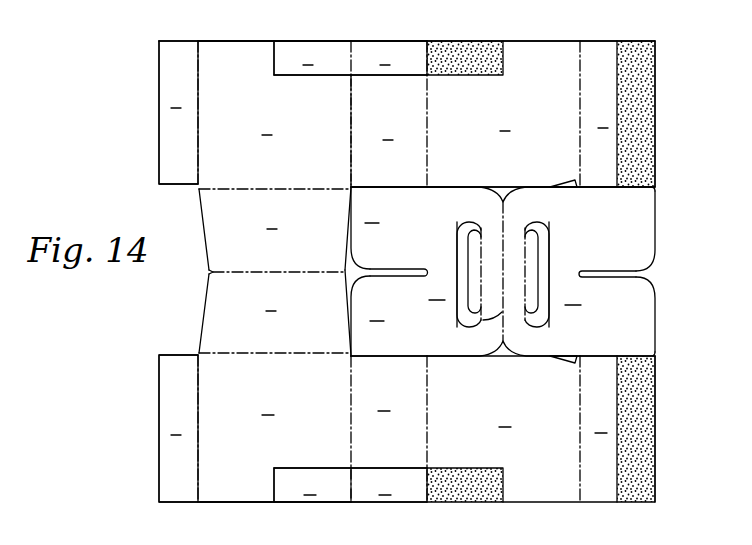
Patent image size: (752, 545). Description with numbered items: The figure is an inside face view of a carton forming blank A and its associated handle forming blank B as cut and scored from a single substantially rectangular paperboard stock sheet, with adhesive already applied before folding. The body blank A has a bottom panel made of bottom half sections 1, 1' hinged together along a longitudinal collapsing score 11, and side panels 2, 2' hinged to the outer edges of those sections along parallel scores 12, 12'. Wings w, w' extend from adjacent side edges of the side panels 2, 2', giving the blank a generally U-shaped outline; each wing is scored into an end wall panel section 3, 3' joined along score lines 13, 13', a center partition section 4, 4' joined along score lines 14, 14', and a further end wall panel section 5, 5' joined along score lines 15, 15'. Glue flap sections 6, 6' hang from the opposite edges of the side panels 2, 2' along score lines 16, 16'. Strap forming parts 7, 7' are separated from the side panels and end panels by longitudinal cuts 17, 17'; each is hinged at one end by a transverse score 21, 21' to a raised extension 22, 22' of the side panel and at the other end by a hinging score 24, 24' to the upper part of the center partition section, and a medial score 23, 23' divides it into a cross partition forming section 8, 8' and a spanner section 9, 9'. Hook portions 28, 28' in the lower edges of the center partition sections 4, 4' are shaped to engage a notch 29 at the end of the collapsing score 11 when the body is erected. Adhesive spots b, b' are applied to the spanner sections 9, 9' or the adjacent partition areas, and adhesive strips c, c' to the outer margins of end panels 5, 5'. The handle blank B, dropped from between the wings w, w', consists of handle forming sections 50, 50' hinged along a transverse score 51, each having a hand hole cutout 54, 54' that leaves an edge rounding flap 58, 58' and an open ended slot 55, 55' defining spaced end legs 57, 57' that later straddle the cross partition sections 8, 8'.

The bottom half section 1 is at (275, 228).
The bottom half section 1' is at (275, 313).
The side panel 2 is at (274, 88).
The side panel 2' is at (274, 451).
The end wall panel section 3 is at (389, 156).
The end wall panel section 3' is at (389, 383).
The center partition section 4 is at (503, 151).
The center partition section 4' is at (503, 391).
The end wall panel section 5 is at (617, 150).
The end wall panel section 5' is at (617, 394).
The glue flap section 6 is at (178, 112).
The glue flap section 6' is at (178, 428).
The strap forming part 7 is at (350, 28).
The strap forming part 7' is at (350, 521).
The cross partition forming section 8 is at (312, 58).
The cross partition forming section 8' is at (312, 485).
The spanner section 9 is at (389, 62).
The spanner section 9' is at (389, 481).
The collapsing score 11 is at (254, 270).
The score 12 is at (275, 179).
The score 12' is at (275, 363).
The score line 13 is at (336, 131).
The score line 13' is at (334, 429).
The score line 14 is at (444, 114).
The score line 14' is at (446, 429).
The score line 15 is at (564, 114).
The score line 15' is at (564, 429).
The score line 16 is at (214, 112).
The score line 16' is at (215, 428).
The longitudinally extending cut 17 is at (350, 87).
The longitudinally extending cut 17' is at (350, 453).
The transverse score 21 is at (267, 49).
The transverse score 21' is at (279, 498).
The raised extension 22 is at (236, 38).
The raised extension 22' is at (236, 508).
The medial score 23 is at (338, 105).
The medial score 23' is at (338, 496).
The hinging score 24 is at (416, 47).
The hinging score 24' is at (416, 499).
The hook portion 28 is at (575, 193).
The hook portion 28' is at (574, 349).
The notch 29 is at (210, 272).
The handle forming section 50 is at (443, 274).
The handle forming section 50' is at (566, 274).
The transverse score 51 is at (494, 317).
The hand hole cutout 54 is at (456, 271).
The hand hole cutout 54' is at (556, 272).
The open ended slot 55 is at (399, 263).
The open ended slot 55' is at (607, 263).
The end leg 57 is at (368, 271).
The end leg 57' is at (668, 271).
The edge rounding flap 58 is at (456, 274).
The edge rounding flap 58' is at (556, 274).
The carton forming blank A is at (661, 65).
The handle forming blank B is at (664, 211).
The adhesive spot b is at (465, 48).
The adhesive spot b' is at (465, 499).
The adhesive strip c is at (652, 114).
The adhesive strip c' is at (653, 429).
The wing w is at (687, 114).
The wing w' is at (687, 429).